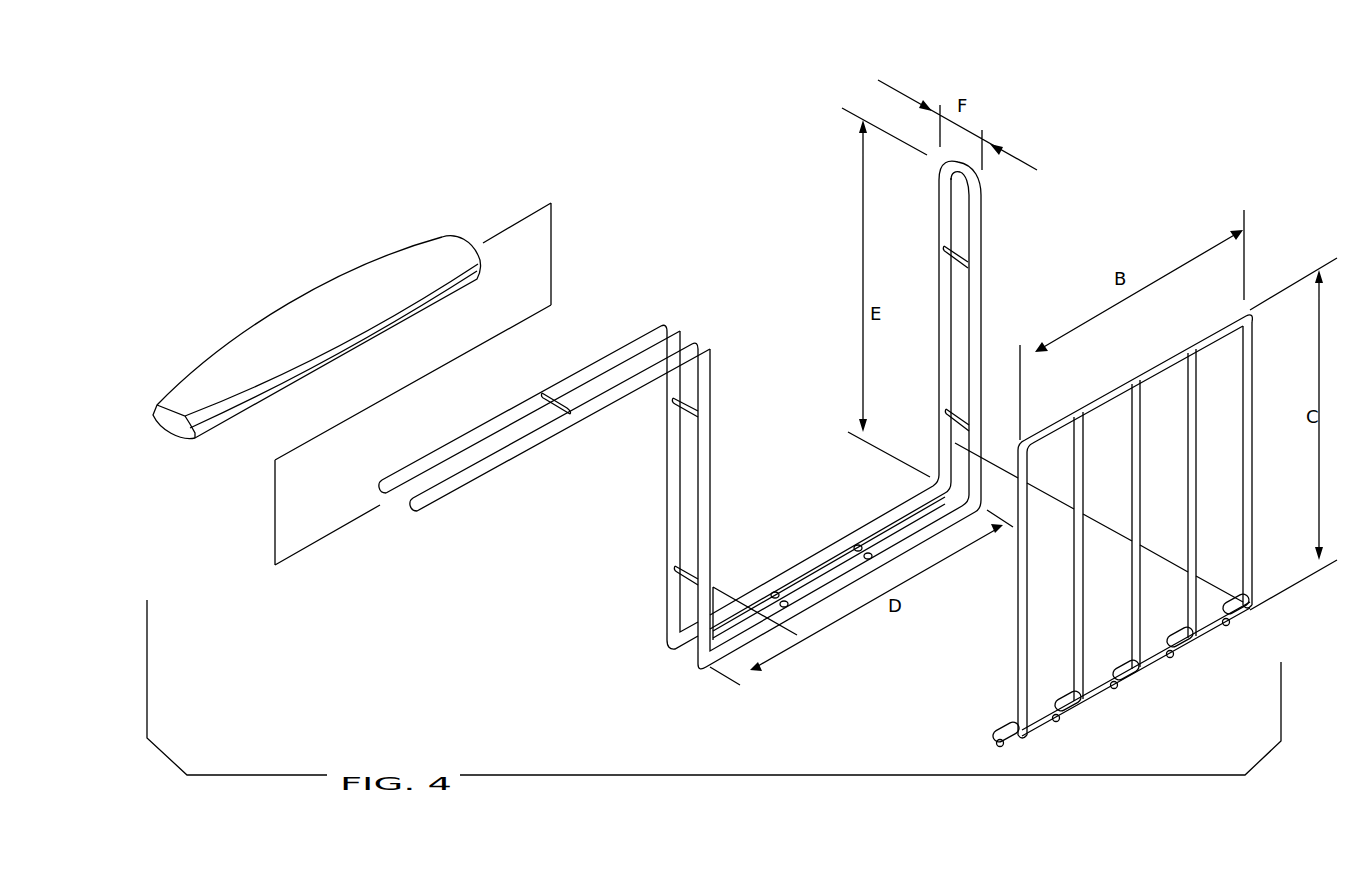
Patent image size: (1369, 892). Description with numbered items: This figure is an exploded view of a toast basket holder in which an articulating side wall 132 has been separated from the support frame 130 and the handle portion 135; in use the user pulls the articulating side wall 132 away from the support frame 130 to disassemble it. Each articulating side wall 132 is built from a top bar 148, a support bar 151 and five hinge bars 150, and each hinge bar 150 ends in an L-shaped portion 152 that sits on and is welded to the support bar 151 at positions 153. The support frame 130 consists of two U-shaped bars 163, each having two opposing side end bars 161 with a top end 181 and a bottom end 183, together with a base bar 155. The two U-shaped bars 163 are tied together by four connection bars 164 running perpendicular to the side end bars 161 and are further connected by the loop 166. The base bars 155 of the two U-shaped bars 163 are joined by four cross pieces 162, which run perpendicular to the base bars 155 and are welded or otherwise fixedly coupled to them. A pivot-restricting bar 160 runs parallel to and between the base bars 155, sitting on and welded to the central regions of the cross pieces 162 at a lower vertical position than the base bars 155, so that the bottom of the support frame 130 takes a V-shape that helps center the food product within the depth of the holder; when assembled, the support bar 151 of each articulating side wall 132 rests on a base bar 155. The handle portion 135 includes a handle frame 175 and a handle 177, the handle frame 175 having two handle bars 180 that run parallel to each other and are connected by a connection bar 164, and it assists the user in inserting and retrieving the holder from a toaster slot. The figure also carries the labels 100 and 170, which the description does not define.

The backrest assembly 100 is at (842, 460).
The support frame 130 is at (1095, 473).
The articulating side wall 132 is at (1254, 360).
The handle portion 135 is at (612, 100).
The top bar 148 is at (1210, 333).
The hinge bar 150 is at (1027, 599).
The support bar 151 is at (1047, 729).
The L-shaped portion 152 is at (1172, 632).
The positions 153 is at (1230, 622).
The base bar 155 is at (822, 553).
The pivot-restricting bar 160 is at (858, 415).
The side end bar 161 is at (667, 435).
The cross piece 162 is at (690, 642).
The U-shaped bar 163 is at (667, 473).
The connection bar 164 is at (543, 390).
The loop 166 is at (938, 170).
The bolt 170 is at (1123, 689).
The handle frame 175 is at (500, 417).
The handle 177 is at (385, 270).
The handle bar 180 is at (487, 465).
The top end 181 is at (1015, 218).
The bottom end 183 is at (982, 468).